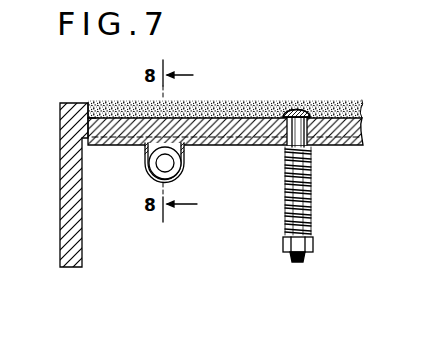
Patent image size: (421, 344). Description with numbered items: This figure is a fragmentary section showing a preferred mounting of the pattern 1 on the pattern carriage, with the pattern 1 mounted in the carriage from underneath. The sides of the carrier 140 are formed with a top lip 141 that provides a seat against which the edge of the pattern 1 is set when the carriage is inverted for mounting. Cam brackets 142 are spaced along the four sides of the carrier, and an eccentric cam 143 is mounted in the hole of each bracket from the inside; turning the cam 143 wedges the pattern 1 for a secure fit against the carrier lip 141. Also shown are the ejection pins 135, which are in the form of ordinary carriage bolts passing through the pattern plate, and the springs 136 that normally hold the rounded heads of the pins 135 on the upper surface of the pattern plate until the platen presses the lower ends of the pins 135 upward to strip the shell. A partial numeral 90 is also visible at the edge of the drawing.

The pattern 1 is at (242, 128).
The ejection pins 135 is at (360, 130).
The springs 136 is at (311, 187).
The carrier sides 140 is at (60, 137).
The top lip 141 is at (96, 117).
The cam bracket 142 is at (147, 152).
The eccentric cam 143 is at (182, 166).
The partial numeral 90 is at (10, 198).